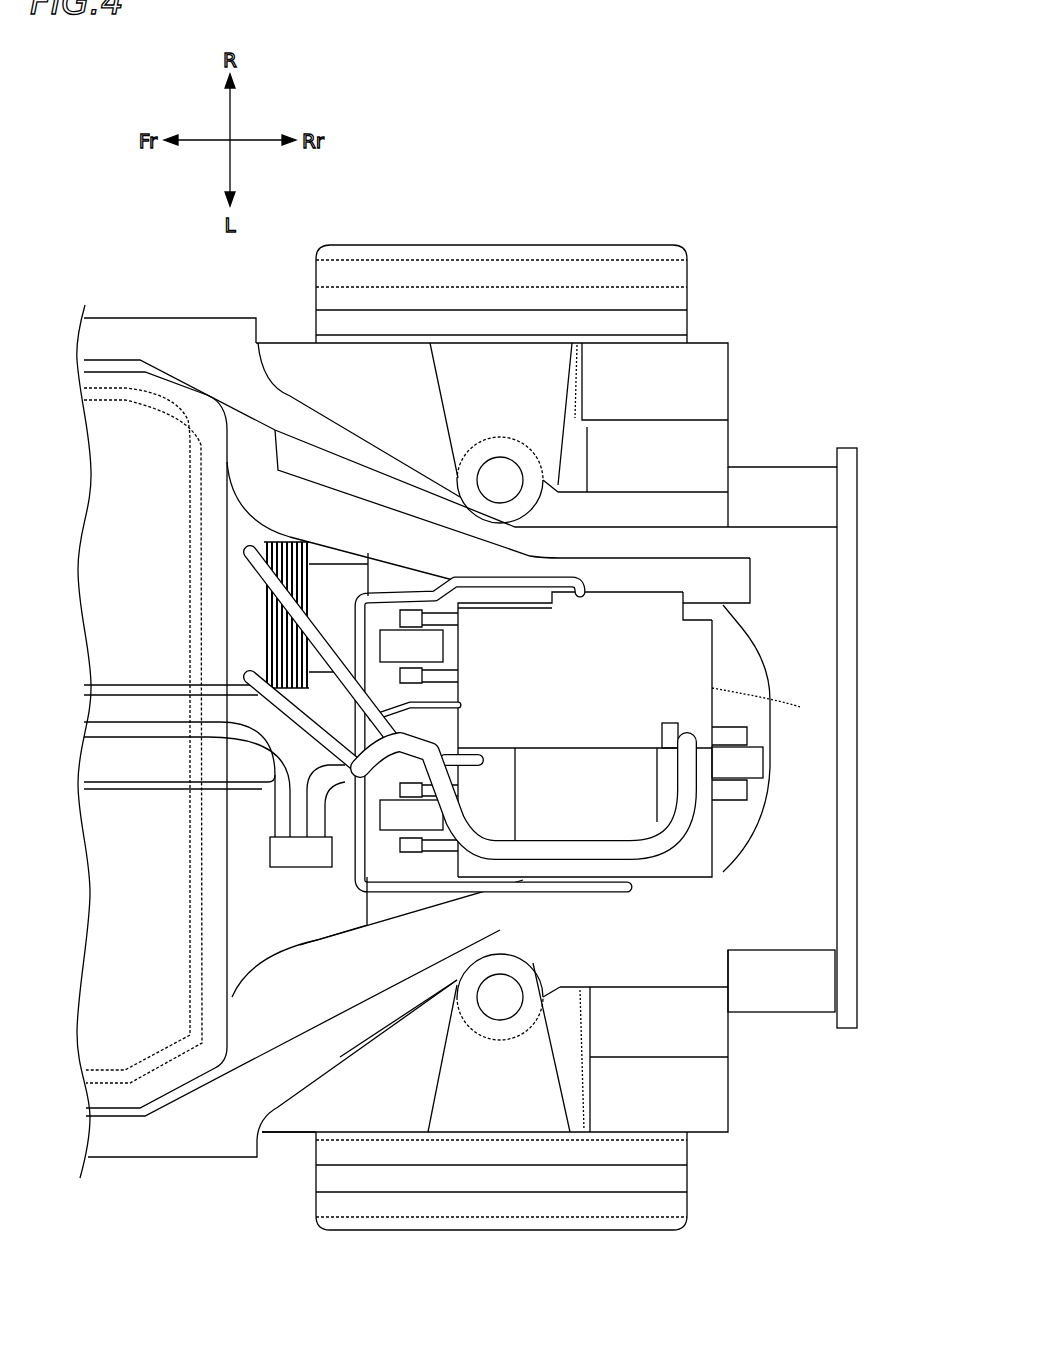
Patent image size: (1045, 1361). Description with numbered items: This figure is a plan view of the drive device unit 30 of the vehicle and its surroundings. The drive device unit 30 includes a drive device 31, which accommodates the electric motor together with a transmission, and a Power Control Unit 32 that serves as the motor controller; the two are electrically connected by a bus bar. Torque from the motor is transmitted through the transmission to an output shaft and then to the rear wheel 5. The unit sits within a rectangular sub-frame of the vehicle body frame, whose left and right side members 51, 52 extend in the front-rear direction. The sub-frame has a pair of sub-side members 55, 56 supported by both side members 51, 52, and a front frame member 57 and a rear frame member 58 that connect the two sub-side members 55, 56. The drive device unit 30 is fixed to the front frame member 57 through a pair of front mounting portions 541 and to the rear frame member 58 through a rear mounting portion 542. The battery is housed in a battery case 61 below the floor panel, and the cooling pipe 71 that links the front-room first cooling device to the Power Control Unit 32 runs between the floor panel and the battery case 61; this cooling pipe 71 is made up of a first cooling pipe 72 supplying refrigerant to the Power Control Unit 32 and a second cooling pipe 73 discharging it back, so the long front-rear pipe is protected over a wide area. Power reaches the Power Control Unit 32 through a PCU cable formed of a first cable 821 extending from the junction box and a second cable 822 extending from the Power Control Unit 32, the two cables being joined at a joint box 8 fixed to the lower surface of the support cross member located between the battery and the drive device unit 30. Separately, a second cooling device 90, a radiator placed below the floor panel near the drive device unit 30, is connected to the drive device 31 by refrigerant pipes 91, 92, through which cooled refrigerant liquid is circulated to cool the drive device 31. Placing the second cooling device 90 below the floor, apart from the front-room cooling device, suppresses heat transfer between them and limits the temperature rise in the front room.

The rear wheel 5 is at (690, 312).
The joint box 8 is at (300, 867).
The drive device unit 30 is at (903, 727).
The drive device 31 is at (710, 823).
The Power Control Unit 32 is at (720, 688).
The side member 51 is at (172, 318).
The side member 52 is at (118, 1158).
The sub-side member 55 is at (658, 558).
The sub-side member 56 is at (707, 927).
The front frame member 57 is at (355, 770).
The rear frame member 58 is at (757, 647).
The battery case 61 is at (160, 1098).
The cooling pipe 71 is at (178, 612).
The first cooling pipe 72 is at (155, 722).
The second cooling pipe 73 is at (115, 685).
The second cooling device 90 is at (255, 540).
The refrigerant pipe 91 is at (418, 775).
The refrigerant pipe 92 is at (470, 800).
The front mounting portion 541 is at (380, 648).
The rear mounting portion 542 is at (765, 763).
The first cable 821 is at (125, 740).
The second cable 822 is at (640, 810).